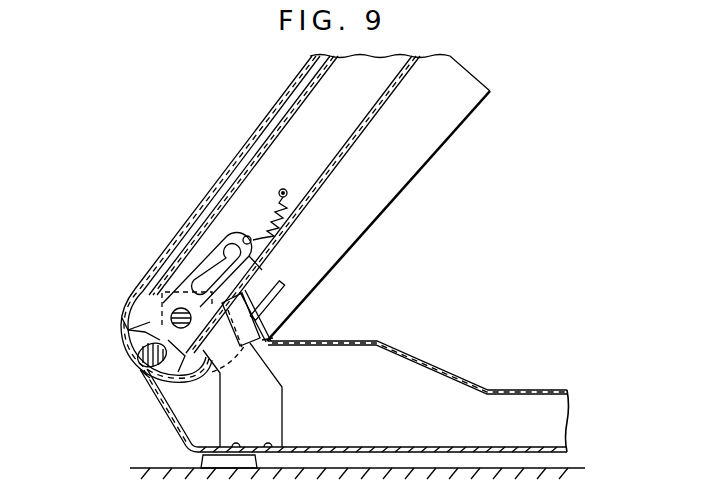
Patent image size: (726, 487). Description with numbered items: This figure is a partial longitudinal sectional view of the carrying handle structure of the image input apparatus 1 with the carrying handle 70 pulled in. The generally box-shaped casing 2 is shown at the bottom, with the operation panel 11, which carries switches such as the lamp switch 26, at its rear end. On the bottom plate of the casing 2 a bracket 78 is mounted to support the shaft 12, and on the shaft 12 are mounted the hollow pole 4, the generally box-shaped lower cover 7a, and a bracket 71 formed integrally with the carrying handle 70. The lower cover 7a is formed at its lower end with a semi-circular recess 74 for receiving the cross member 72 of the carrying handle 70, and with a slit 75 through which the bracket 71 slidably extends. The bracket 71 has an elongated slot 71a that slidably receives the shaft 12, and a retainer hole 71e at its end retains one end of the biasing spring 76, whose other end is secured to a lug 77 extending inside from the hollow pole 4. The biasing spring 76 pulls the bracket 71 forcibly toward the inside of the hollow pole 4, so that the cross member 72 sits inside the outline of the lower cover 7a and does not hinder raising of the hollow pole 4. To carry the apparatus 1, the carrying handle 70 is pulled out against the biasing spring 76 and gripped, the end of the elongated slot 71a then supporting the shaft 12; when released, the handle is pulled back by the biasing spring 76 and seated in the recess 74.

The image input apparatus 1 is at (448, 233).
The casing 2 is at (163, 419).
The hollow pole 4 is at (390, 100).
The lower cover 7a is at (257, 128).
The operation panel 11 is at (283, 330).
The shaft 12 is at (171, 316).
The lamp switch 26 is at (283, 293).
The carrying handle 70 is at (134, 364).
The bracket 71 is at (190, 269).
The elongated slot 71a is at (250, 260).
The retainer hole 71e is at (246, 237).
The cross member 72 is at (148, 372).
The semi-circular recess 74 is at (125, 332).
The slit 75 is at (134, 347).
The biasing spring 76 is at (290, 218).
The lug 77 is at (283, 189).
The bracket 78 is at (280, 410).